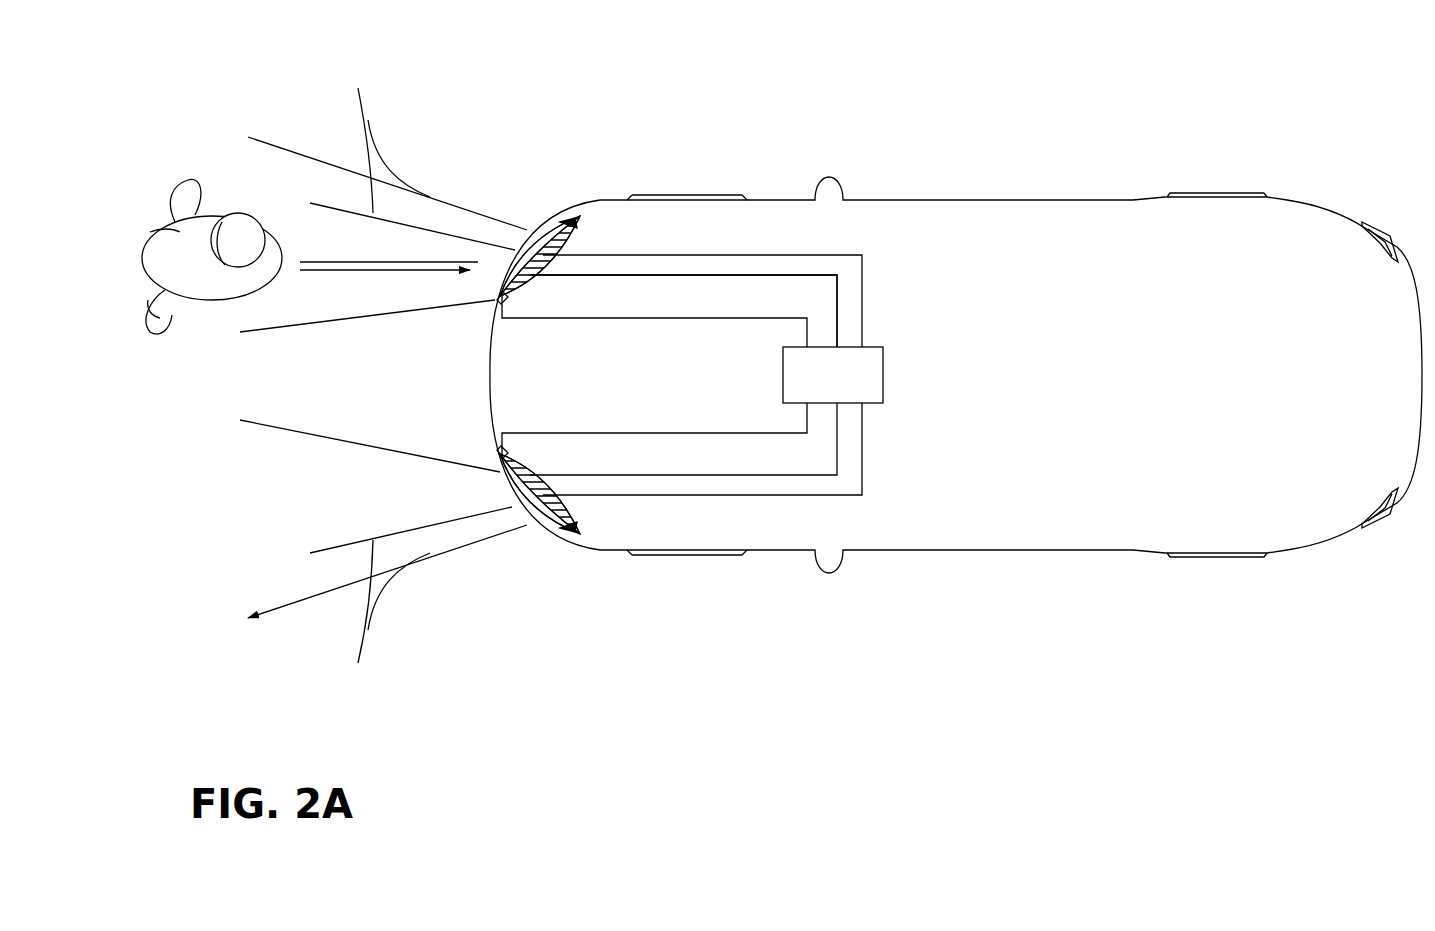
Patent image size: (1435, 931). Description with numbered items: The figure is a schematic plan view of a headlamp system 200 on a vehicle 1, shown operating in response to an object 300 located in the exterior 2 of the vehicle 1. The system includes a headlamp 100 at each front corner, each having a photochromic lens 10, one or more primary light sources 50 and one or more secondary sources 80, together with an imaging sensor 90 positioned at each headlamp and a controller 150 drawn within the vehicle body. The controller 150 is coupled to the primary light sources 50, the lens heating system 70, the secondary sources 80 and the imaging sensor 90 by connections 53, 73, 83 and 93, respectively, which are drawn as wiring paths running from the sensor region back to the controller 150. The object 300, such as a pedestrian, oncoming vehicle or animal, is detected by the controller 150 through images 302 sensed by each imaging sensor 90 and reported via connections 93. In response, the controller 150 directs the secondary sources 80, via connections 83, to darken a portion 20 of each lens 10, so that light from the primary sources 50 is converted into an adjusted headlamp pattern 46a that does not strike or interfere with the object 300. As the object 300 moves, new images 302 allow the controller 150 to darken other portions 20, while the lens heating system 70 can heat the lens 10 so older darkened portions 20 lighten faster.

The vehicle 1 is at (1119, 328).
The exterior 2 is at (306, 115).
The photochromic lens 10 is at (577, 240).
The portion of the lens 20 is at (505, 278).
The adjusted headlamp pattern 46a is at (380, 375).
The primary light source 50 is at (542, 228).
The connection 53 is at (727, 272).
The lens heating system 70 is at (600, 243).
The connection 73 is at (864, 268).
The secondary light source 80 is at (540, 375).
The connection 83 is at (683, 311).
The imaging sensor 90 is at (498, 300).
The connection 93 is at (778, 316).
The headlamp 100 is at (570, 230).
The controller 150 is at (842, 389).
The headlamp system 200 is at (853, 140).
The object 300 is at (215, 310).
The images 302 is at (355, 258).